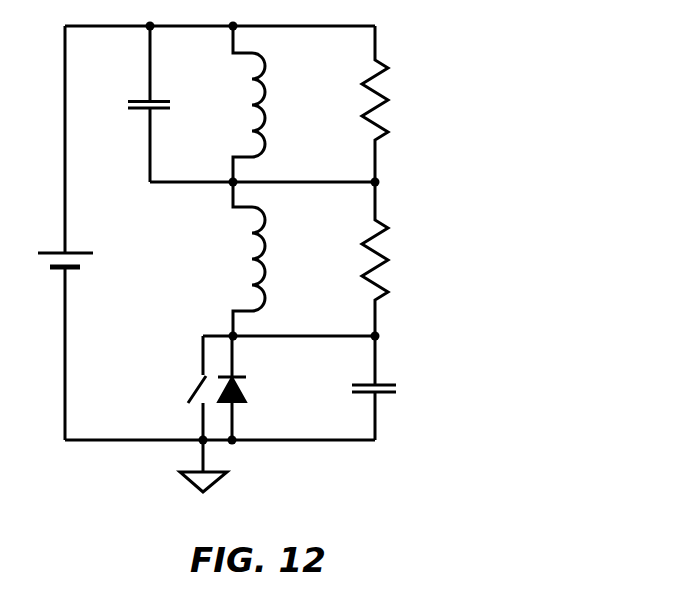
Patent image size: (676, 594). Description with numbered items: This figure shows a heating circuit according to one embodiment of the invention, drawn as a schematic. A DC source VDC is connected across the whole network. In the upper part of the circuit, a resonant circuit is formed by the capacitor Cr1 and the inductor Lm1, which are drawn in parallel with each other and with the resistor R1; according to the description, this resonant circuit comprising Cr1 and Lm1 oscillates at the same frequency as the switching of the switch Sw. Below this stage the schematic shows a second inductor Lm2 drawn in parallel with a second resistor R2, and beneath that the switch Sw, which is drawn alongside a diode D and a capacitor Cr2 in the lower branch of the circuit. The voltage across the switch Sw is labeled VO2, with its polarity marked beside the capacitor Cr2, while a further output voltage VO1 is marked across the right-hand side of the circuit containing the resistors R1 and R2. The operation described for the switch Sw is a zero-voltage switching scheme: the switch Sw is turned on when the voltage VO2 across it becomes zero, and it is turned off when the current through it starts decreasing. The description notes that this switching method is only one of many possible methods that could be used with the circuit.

The DC voltage source VDC is at (91, 261).
The resonant capacitor Cr1 is at (129, 104).
The resonant inductor Lm1 is at (227, 104).
The first load resistor R1 is at (394, 104).
The second magnetizing inductor Lm2 is at (230, 259).
The second load resistor R2 is at (394, 259).
The switch Sw is at (174, 388).
The diode D is at (246, 388).
The second resonant capacitor Cr2 is at (398, 388).
The voltage across the switch VO2 is at (323, 391).
The first output voltage VO1 is at (498, 309).